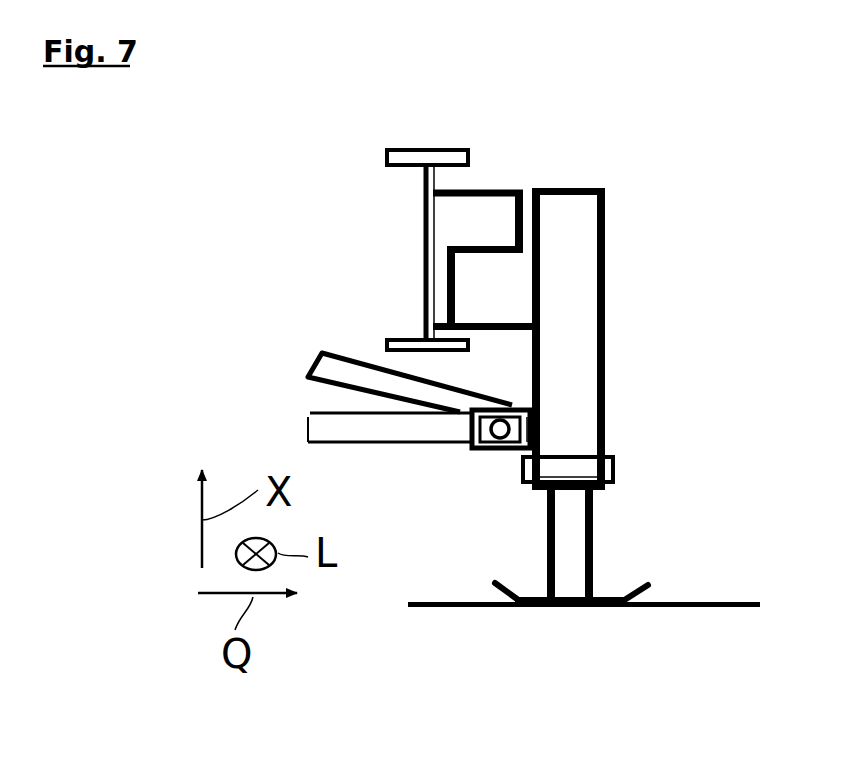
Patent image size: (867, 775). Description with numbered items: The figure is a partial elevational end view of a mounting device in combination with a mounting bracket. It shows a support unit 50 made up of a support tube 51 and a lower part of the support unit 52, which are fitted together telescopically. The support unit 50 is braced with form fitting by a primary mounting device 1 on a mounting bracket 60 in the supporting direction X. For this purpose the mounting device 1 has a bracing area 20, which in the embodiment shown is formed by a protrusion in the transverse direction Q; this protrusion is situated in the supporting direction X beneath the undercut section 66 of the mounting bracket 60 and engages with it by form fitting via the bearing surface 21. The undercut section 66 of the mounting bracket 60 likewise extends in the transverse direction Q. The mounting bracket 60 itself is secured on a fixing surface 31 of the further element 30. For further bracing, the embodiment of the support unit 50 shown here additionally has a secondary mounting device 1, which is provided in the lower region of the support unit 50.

The mounting device 1 is at (555, 275).
The bracing area 20 is at (482, 292).
The bearing surface 21 is at (478, 251).
The further element 30 is at (366, 153).
The fixing surface 31 is at (426, 235).
The support unit 50 is at (622, 240).
The support tube 51 is at (568, 408).
The lower part of the support unit 52 is at (575, 562).
The mounting bracket 60 is at (489, 180).
The undercut section 66 is at (502, 217).